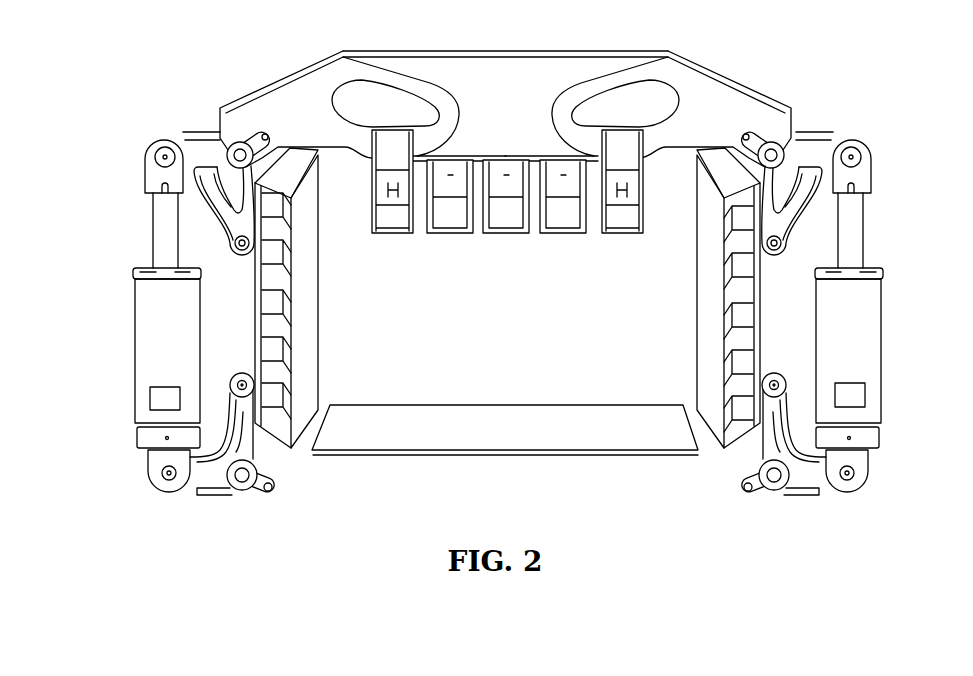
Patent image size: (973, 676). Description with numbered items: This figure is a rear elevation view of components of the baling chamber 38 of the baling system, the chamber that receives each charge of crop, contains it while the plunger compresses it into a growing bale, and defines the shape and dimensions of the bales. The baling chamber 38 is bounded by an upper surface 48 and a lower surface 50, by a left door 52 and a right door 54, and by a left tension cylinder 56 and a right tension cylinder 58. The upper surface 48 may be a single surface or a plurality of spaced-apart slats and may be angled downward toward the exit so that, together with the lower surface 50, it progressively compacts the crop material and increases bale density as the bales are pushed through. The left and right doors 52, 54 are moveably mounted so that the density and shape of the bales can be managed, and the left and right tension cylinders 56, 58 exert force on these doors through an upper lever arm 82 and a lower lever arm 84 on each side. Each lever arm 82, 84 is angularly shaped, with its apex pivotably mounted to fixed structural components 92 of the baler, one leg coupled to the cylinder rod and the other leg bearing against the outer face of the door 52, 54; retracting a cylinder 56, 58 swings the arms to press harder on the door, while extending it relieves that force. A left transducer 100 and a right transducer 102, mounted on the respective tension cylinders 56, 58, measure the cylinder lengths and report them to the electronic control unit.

The baling chamber 38 is at (500, 313).
The upper surface 48 is at (402, 240).
The lower surface 50 is at (505, 430).
The left door 52 is at (312, 312).
The right door 54 is at (703, 313).
The left tension cylinder 56 is at (93, 283).
The right tension cylinder 58 is at (928, 290).
The upper lever arm 82 is at (814, 114).
The lower lever arm 84 is at (796, 510).
The fixed structural components 92 is at (717, 90).
The left transducer 100 is at (160, 399).
The right transducer 102 is at (858, 395).